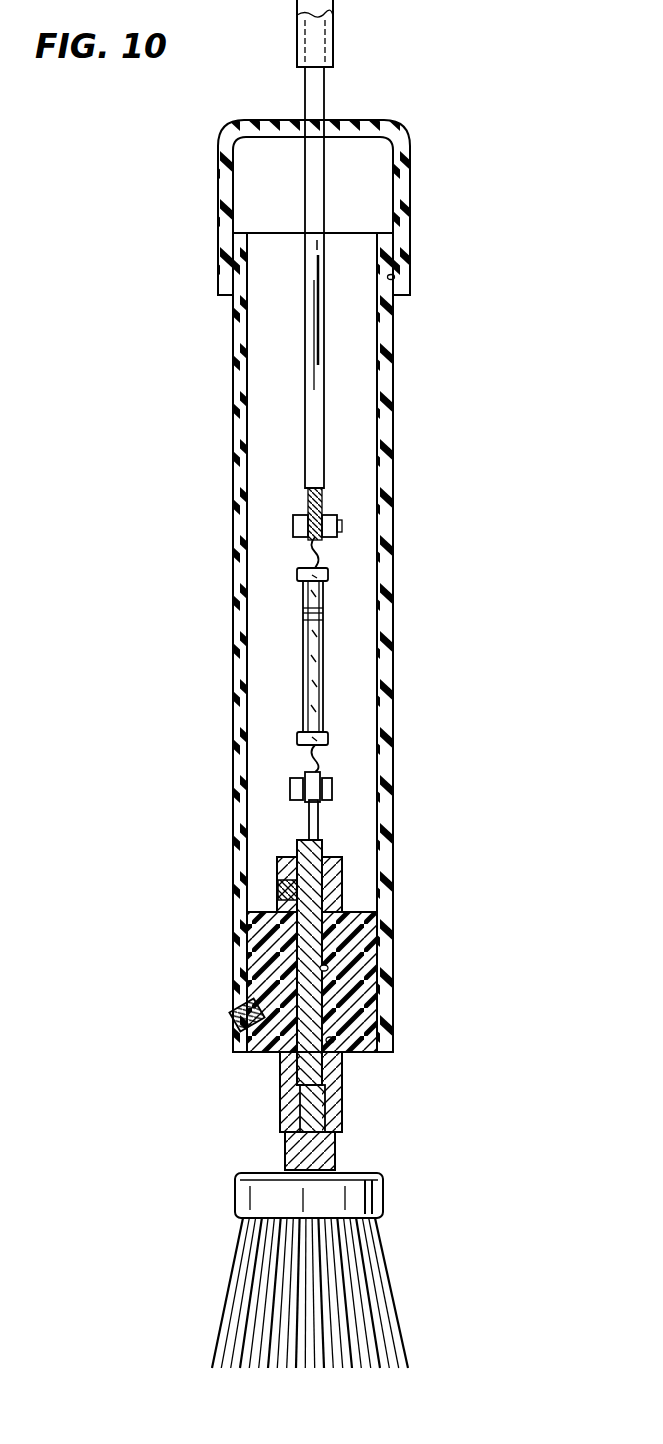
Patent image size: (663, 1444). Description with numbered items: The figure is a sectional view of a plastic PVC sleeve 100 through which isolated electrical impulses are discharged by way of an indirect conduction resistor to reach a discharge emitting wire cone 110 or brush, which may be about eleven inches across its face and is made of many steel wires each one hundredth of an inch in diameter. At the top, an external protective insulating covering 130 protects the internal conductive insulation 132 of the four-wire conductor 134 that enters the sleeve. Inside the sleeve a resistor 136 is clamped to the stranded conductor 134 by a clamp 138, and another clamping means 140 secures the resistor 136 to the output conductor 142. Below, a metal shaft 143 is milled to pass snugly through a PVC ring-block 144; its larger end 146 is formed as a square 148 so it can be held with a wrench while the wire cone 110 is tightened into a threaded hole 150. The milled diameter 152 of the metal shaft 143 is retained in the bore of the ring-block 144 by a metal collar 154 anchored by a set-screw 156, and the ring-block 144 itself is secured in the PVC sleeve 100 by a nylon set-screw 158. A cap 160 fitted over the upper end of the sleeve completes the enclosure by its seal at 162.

The PVC sleeve 100 is at (404, 353).
The discharge emitting wire cone 110 is at (395, 1300).
The external protective insulating covering 130 is at (333, 47).
The internal conductive insulation 132 is at (330, 103).
The four-wire conductor 134 is at (325, 500).
The resistor 136 is at (328, 665).
The clamp 138 is at (340, 538).
The clamping means 140 is at (340, 780).
The output conductor 142 is at (322, 820).
The metal shaft 143 is at (328, 968).
The PVC ring-block 144 is at (360, 1005).
The larger end 146 is at (343, 1082).
The square 148 is at (343, 1120).
The threaded hole 150 is at (283, 1118).
The milled diameter 152 is at (325, 938).
The metal collar 154 is at (346, 885).
The set-screw 156 is at (277, 885).
The nylon set-screw 158 is at (240, 1016).
The cap 160 is at (411, 197).
The seal 162 is at (400, 275).